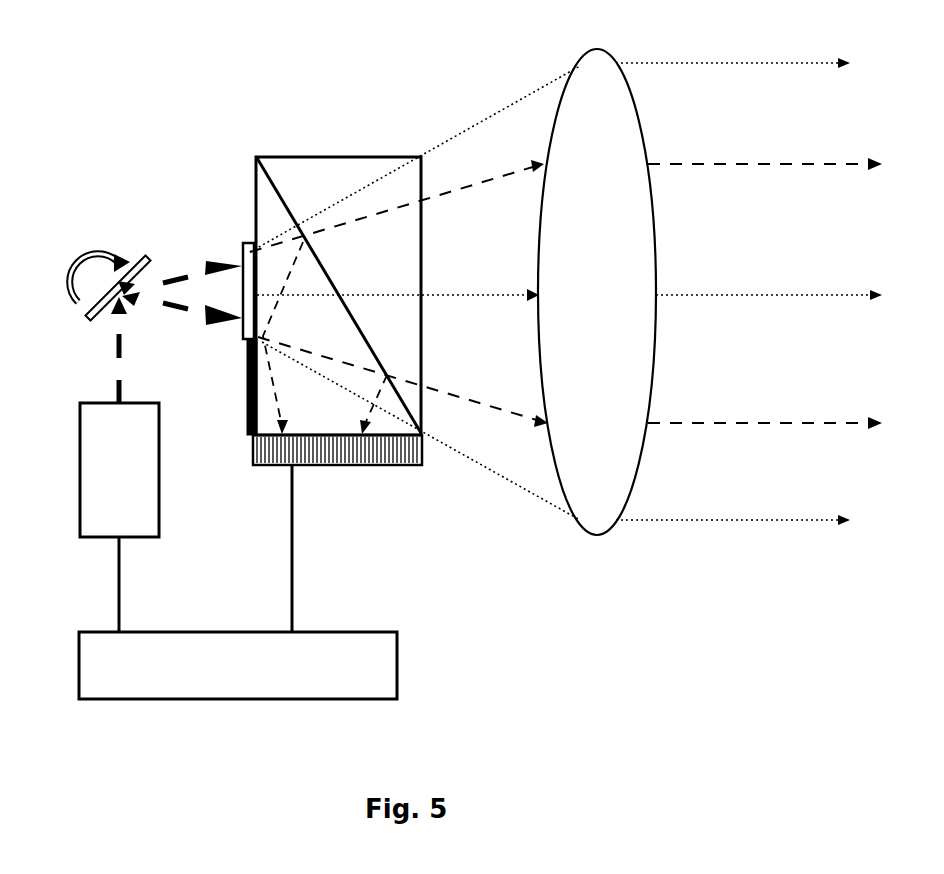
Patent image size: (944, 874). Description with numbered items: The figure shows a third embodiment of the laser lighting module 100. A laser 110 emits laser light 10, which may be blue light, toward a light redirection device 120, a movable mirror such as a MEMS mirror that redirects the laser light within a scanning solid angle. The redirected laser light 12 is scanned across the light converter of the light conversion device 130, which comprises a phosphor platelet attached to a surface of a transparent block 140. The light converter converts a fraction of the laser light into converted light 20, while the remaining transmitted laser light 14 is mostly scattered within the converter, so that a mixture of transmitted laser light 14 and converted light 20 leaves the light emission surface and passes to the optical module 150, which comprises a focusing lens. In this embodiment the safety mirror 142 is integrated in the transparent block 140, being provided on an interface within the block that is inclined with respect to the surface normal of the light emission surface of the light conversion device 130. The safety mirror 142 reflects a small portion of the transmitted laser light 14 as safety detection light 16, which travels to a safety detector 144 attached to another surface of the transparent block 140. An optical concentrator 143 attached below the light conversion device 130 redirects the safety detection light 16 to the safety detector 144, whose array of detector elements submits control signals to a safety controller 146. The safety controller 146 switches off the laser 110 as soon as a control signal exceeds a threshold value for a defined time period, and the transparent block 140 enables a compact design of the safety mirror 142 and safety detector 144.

The laser lighting module 100 is at (96, 102).
The laser 110 is at (80, 472).
The laser light 10 is at (116, 370).
The light redirection device 120 is at (140, 254).
The redirected laser light 12 is at (182, 312).
The light conversion device 130 is at (240, 246).
The transparent block 140 is at (343, 157).
The safety mirror 142 is at (268, 165).
The optical concentrator 143 is at (247, 368).
The safety detector 144 is at (352, 466).
The safety detection light 16 is at (268, 380).
The safety controller 146 is at (397, 665).
The optical module 150 is at (597, 536).
The transmitted laser light 14 is at (796, 162).
The converted light 20 is at (808, 298).